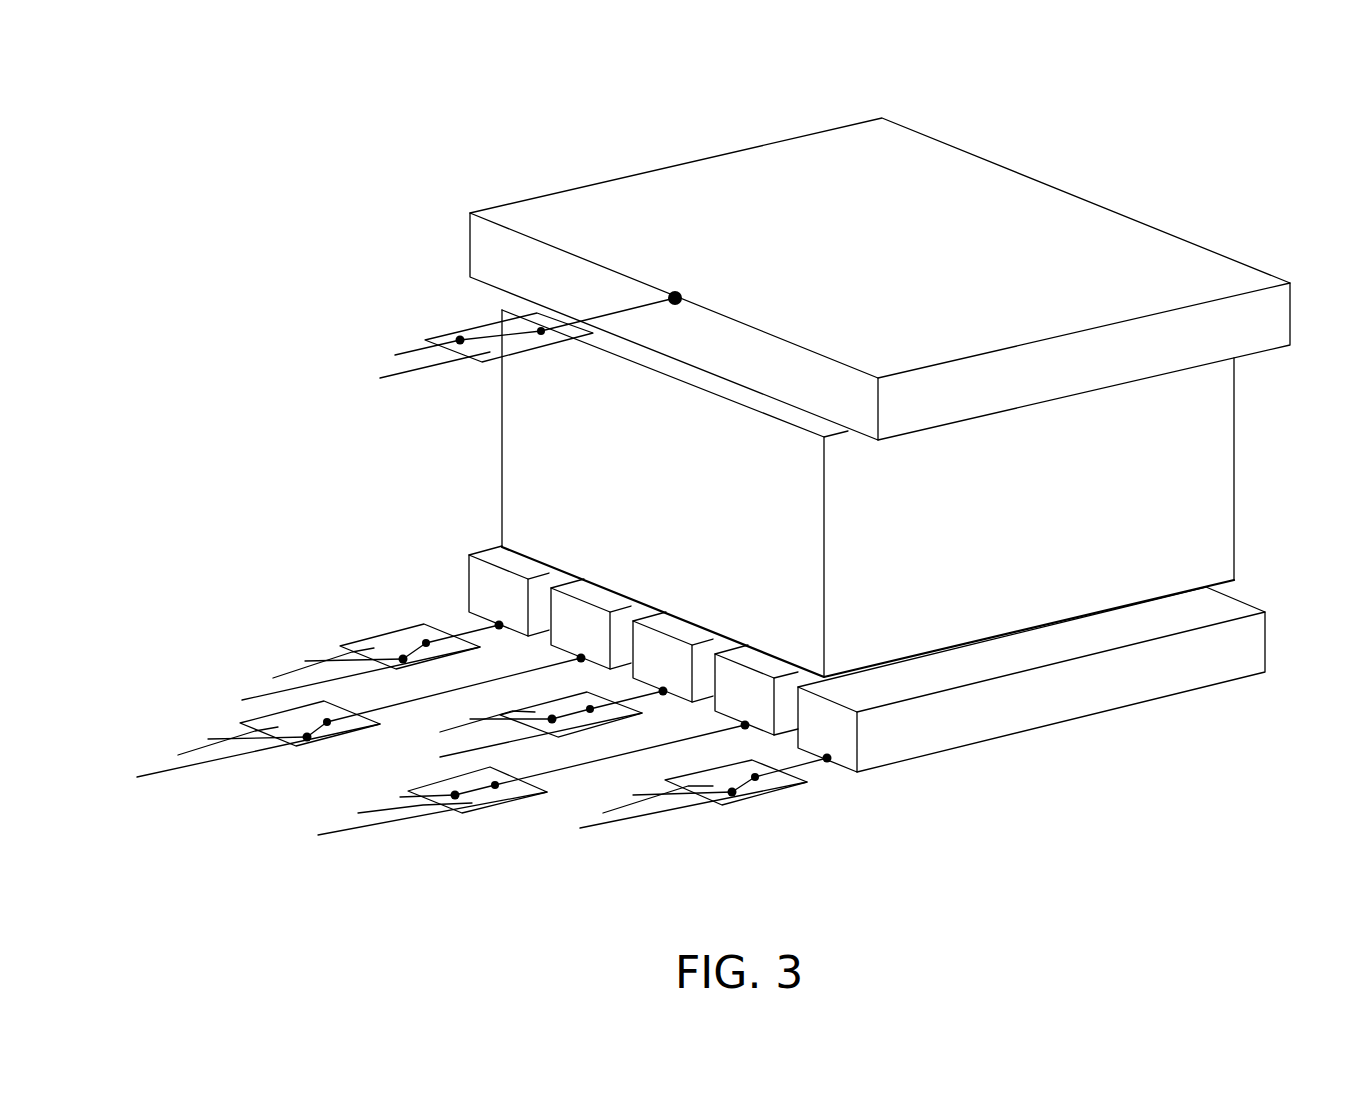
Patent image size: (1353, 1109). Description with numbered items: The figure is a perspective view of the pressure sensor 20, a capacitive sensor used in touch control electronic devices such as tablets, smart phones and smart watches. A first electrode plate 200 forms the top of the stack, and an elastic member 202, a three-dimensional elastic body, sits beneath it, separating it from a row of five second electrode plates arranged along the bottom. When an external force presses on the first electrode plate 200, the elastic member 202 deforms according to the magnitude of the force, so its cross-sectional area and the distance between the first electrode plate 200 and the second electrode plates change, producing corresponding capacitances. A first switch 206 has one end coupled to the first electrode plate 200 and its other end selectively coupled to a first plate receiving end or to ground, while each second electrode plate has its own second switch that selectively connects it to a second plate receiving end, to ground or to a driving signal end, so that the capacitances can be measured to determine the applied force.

The pressure sensor 20 is at (1098, 163).
The first electrode plate 200 is at (968, 248).
The elastic member 202 is at (1092, 545).
The first switch 206 is at (480, 323).